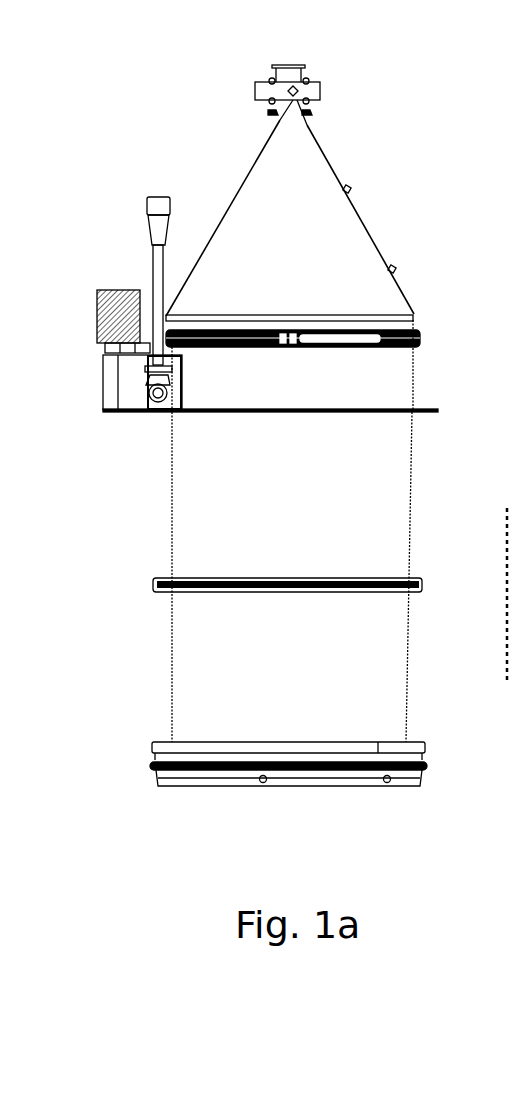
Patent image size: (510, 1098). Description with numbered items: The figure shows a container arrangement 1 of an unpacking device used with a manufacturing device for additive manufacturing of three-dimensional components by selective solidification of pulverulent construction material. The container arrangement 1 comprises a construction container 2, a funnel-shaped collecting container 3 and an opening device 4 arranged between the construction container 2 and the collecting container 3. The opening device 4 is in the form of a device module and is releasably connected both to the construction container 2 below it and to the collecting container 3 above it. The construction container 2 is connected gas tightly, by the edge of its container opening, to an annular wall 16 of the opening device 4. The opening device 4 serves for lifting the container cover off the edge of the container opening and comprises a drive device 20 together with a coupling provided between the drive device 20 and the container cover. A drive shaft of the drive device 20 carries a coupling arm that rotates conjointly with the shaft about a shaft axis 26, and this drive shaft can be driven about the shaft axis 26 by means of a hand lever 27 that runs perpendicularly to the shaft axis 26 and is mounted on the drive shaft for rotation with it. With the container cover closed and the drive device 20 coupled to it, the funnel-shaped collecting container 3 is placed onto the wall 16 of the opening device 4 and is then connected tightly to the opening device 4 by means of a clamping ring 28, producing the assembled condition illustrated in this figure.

The container arrangement 1 is at (213, 118).
The construction container 2 is at (155, 540).
The funnel-shaped collecting container 3 is at (385, 228).
The opening device 4 is at (147, 428).
The annular wall 16 is at (416, 378).
The drive device 20 is at (172, 400).
The shaft axis 26 is at (147, 391).
The hand lever 27 is at (150, 228).
The clamping ring 28 is at (418, 336).